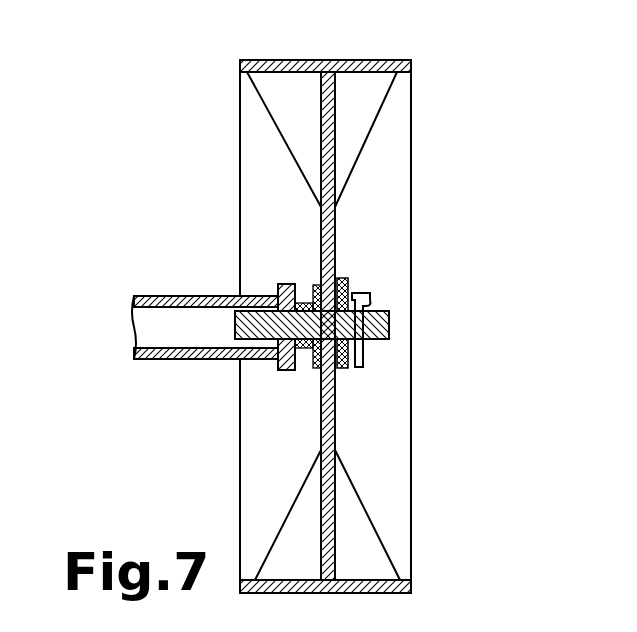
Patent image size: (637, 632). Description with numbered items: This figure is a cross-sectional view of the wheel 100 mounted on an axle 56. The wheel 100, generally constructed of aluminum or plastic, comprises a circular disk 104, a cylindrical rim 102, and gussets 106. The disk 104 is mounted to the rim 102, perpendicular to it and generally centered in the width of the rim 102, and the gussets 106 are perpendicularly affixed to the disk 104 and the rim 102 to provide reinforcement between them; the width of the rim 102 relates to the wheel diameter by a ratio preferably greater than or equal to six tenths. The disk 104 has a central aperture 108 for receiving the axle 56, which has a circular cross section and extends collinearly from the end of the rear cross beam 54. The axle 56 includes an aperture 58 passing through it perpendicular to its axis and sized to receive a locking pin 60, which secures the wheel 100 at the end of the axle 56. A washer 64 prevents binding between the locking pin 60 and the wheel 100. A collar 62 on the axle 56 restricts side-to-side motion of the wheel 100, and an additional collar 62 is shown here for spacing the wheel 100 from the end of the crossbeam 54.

The wheel 100 is at (414, 71).
The cylindrical rim 102 is at (355, 60).
The circular disk 104 is at (320, 220).
The gussets 106 is at (385, 100).
The central aperture 108 is at (348, 292).
The rear cross beam 54 is at (198, 296).
The axle 56 is at (389, 325).
The aperture 58 is at (377, 300).
The locking pin 60 is at (353, 290).
The collar 62 is at (278, 367).
The washer 64 is at (349, 371).